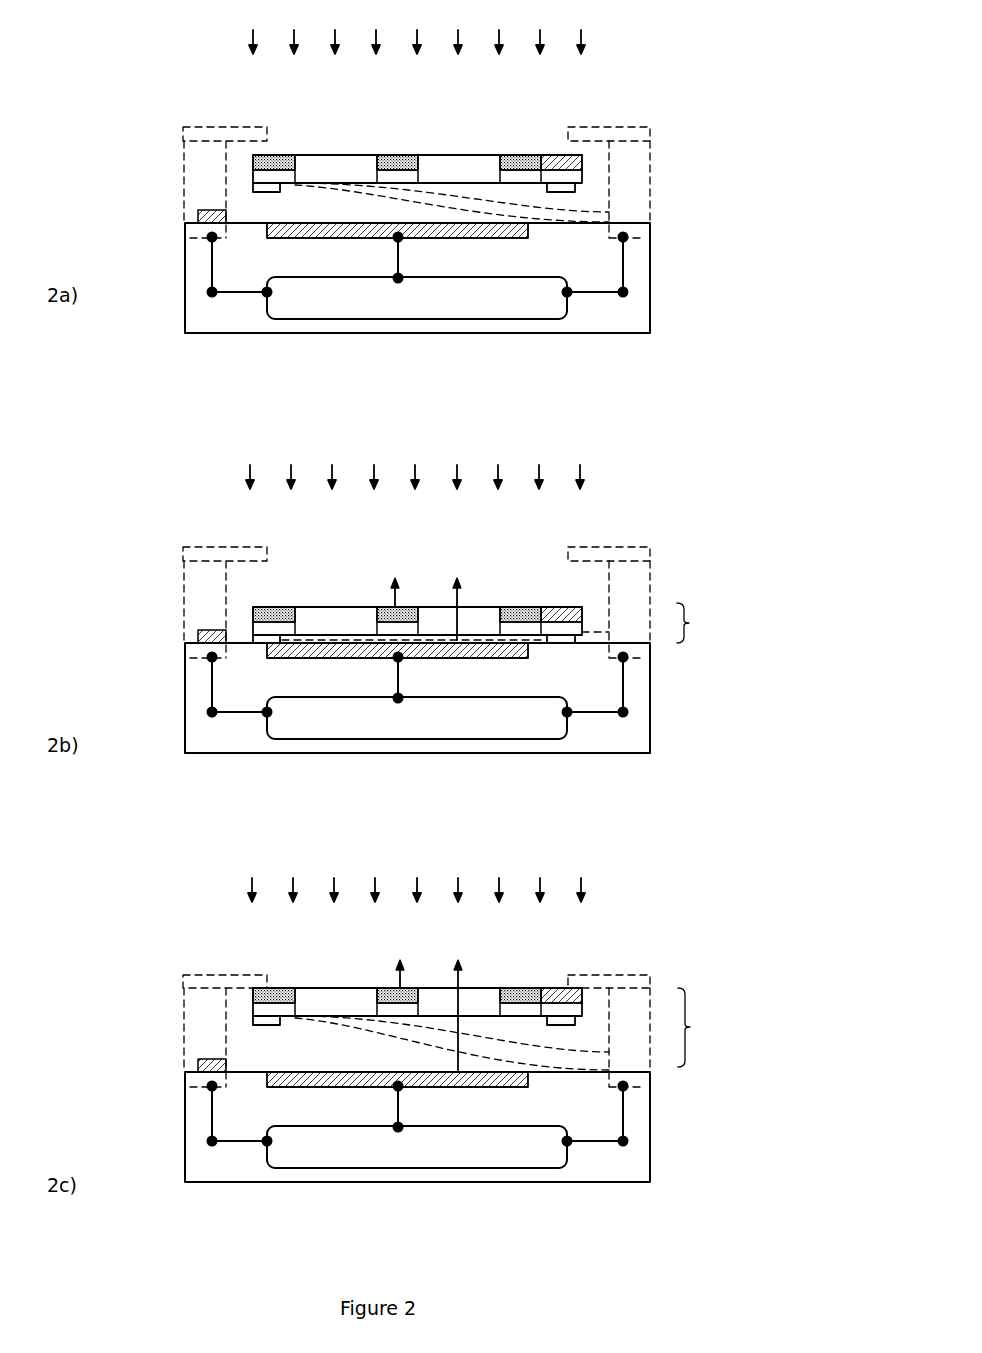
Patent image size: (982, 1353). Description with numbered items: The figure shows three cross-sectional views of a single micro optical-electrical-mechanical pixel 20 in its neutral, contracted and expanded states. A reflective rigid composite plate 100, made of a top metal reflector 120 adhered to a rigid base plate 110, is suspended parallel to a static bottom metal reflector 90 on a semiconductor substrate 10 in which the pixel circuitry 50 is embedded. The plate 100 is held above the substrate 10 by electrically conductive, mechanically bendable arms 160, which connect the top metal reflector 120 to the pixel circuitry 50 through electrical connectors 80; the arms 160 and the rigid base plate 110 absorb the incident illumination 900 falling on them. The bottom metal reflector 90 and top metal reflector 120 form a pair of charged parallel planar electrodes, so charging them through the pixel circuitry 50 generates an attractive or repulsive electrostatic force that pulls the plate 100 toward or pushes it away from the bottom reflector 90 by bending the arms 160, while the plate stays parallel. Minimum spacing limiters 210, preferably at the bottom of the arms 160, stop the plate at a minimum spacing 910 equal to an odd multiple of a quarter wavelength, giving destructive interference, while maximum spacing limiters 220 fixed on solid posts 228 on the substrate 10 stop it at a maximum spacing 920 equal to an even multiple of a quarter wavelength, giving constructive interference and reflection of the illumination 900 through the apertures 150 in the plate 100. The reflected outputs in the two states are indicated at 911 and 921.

The semiconductor substrate 10 is at (650, 298).
The micro optical-electrical-mechanical pixel 20 is at (166, 340).
The pixel circuitry 50 is at (427, 320).
The electrical connectors 80 is at (190, 238).
The static bottom metal reflector 90 is at (333, 240).
The reflective rigid composite plate 100 is at (104, 167).
The rigid base plate 110 is at (253, 180).
The top metal reflector 120 is at (253, 162).
The apertures 150 is at (335, 168).
The bendable arms 160 is at (560, 160).
The minimum spacing limiters 210 is at (575, 190).
The maximum spacing limiters 220 is at (573, 128).
The solid posts 228 is at (645, 162).
The incident illumination 900 is at (582, 37).
The minimum spacing 910 is at (705, 623).
The first reflected radiation 911 is at (458, 576).
The maximum spacing 920 is at (710, 1027).
The second reflected radiation 921 is at (463, 959).